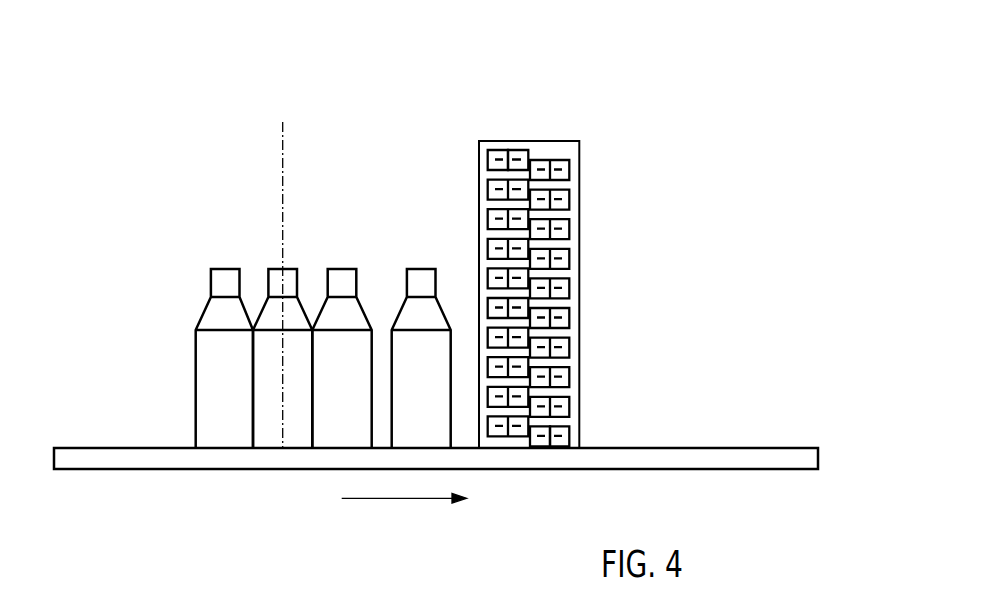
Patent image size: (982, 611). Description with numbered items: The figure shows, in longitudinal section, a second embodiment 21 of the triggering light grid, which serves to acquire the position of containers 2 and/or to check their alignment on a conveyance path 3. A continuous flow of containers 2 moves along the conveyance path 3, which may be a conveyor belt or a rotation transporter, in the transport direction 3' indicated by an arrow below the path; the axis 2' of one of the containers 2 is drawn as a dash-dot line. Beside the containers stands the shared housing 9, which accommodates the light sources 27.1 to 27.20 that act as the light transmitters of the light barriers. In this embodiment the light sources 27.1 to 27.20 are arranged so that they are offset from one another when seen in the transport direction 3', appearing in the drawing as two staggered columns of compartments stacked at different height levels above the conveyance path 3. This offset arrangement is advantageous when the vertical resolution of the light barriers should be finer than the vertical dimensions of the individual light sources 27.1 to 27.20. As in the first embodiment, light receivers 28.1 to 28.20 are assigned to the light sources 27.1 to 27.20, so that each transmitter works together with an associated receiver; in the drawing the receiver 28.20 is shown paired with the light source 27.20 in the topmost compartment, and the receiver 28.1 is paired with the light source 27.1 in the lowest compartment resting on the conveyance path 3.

The container 2 is at (323, 333).
The container axis 2' is at (301, 285).
The conveyance path 3 is at (436, 483).
The transport direction 3' is at (404, 520).
The housing 9 is at (572, 150).
The second embodiment of the triggering light grid 21 is at (363, 155).
The light source 27.1 is at (563, 435).
The light source 27.20 is at (523, 152).
The light receiver 28.1 is at (542, 442).
The light receiver 28.20 is at (492, 152).